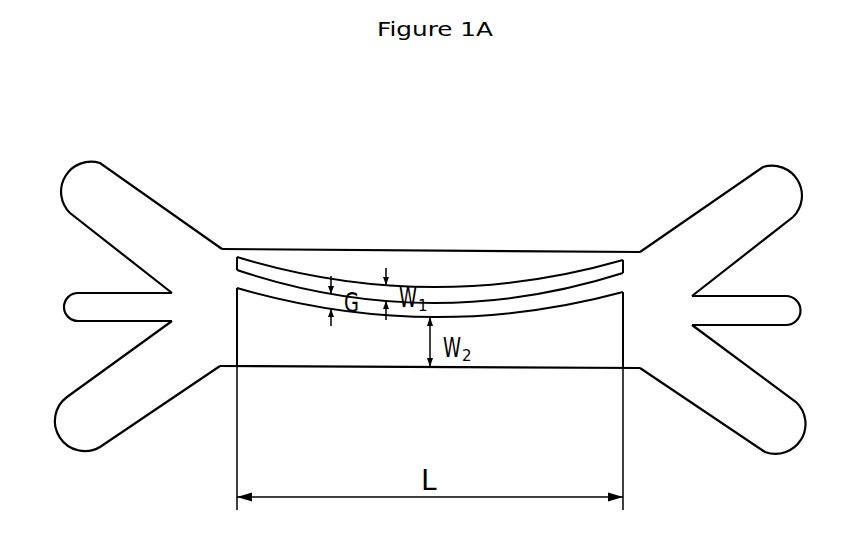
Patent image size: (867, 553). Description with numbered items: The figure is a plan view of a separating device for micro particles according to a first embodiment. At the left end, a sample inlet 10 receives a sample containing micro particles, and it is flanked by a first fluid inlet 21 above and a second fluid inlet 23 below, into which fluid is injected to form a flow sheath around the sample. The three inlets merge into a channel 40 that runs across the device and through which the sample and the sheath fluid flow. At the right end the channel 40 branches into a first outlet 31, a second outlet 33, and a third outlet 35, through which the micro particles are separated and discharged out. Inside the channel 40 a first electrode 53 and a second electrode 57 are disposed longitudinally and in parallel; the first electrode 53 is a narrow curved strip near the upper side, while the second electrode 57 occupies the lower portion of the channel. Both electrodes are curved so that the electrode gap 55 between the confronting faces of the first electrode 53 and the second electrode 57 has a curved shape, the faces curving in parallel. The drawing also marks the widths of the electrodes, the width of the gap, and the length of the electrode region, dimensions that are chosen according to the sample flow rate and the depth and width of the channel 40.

The sample inlet 10 is at (100, 308).
The first fluid inlet 21 is at (128, 221).
The second fluid inlet 23 is at (126, 395).
The first outlet 31 is at (738, 226).
The second outlet 33 is at (737, 399).
The third outlet 35 is at (768, 312).
The channel 40 is at (547, 267).
The first electrode 53 is at (287, 278).
The electrode gap 55 is at (484, 303).
The second electrode 57 is at (303, 345).